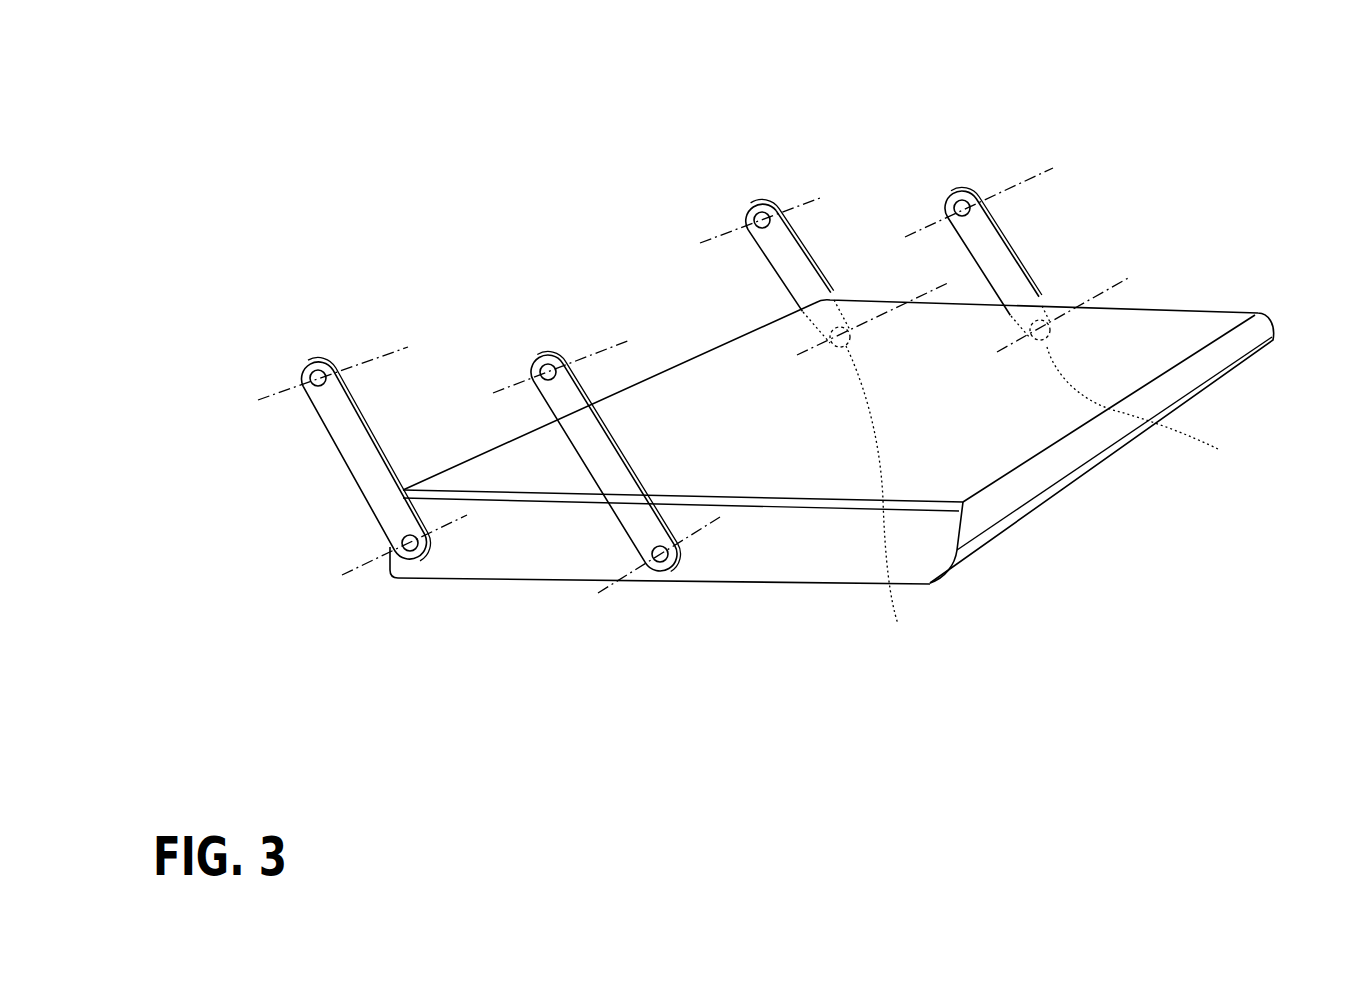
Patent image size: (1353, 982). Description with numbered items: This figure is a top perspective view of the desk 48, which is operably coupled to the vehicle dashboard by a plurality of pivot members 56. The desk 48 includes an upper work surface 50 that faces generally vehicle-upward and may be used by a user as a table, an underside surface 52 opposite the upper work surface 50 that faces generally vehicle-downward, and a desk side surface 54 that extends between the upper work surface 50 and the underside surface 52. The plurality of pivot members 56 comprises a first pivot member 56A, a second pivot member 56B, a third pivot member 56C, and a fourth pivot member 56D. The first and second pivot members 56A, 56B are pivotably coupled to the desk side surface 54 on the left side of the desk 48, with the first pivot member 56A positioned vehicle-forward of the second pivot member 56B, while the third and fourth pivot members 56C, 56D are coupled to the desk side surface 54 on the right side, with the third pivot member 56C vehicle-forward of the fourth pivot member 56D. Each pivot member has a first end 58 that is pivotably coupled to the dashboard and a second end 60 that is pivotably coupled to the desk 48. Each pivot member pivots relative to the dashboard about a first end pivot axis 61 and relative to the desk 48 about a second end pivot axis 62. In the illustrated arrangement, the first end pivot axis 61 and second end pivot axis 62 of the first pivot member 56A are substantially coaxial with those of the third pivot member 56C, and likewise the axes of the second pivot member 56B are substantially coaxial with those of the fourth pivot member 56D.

The desk 48 is at (1133, 140).
The upper work surface 50 is at (1160, 337).
The underside surface 52 is at (683, 587).
The desk side surface 54 is at (533, 547).
The plurality of pivot members 56 is at (709, 393).
The first pivot member 56A is at (352, 447).
The second pivot member 56B is at (597, 453).
The third pivot member 56C is at (788, 253).
The fourth pivot member 56D is at (1005, 257).
The first end 58 is at (312, 363).
The second end 60 is at (400, 577).
The first end pivot axis 61 is at (378, 357).
The second end pivot axis 62 is at (365, 566).